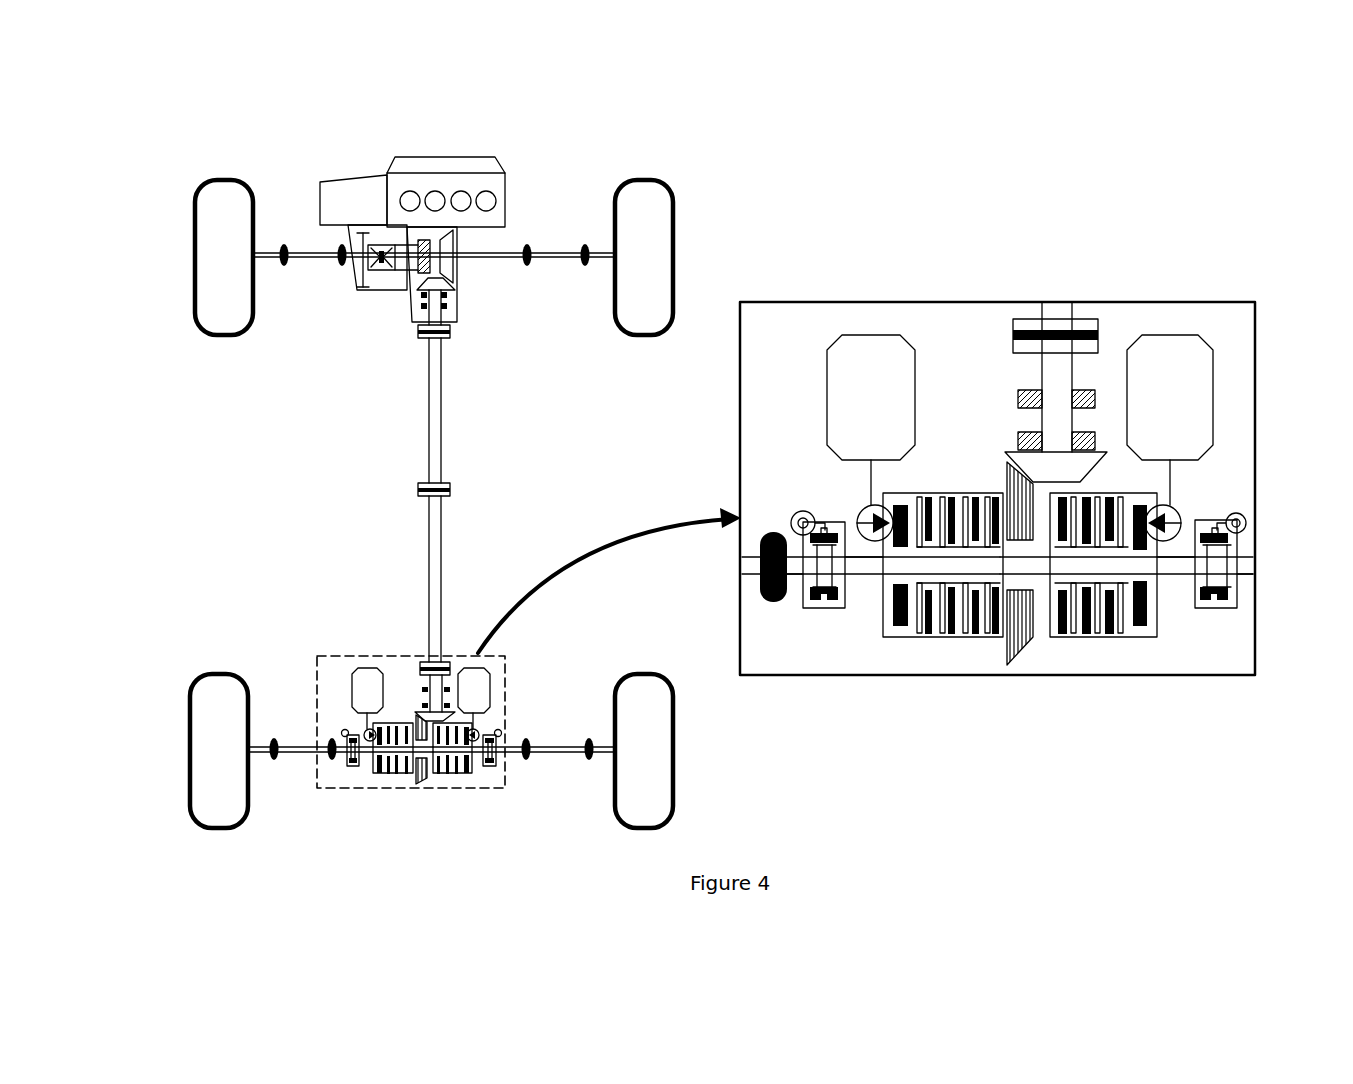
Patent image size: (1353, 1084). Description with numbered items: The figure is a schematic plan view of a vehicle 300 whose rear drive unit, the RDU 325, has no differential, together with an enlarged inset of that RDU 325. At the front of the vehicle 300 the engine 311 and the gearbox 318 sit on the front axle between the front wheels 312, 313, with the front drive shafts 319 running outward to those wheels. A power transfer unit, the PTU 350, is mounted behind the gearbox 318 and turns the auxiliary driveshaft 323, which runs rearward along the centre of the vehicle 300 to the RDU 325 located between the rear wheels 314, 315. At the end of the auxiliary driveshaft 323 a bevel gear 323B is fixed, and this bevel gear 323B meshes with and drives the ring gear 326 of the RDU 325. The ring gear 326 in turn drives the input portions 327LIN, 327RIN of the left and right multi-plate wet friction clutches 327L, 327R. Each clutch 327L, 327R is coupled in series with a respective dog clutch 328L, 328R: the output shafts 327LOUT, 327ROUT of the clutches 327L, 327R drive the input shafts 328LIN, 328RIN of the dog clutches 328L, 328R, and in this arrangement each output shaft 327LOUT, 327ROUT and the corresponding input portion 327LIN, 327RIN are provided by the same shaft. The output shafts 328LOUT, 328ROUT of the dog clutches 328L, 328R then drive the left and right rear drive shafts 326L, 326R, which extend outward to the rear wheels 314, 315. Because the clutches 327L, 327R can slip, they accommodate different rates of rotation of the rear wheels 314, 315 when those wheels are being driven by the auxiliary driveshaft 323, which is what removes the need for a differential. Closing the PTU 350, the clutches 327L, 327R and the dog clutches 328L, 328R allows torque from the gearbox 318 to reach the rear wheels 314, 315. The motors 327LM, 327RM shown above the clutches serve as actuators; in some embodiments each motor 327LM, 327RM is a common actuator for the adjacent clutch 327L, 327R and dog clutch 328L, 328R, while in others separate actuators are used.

The vehicle 300 is at (708, 178).
The engine 311 is at (472, 182).
The front left wheel 312 is at (220, 310).
The front right wheel 313 is at (642, 203).
The rear wheel 314 is at (218, 700).
The rear wheel 315 is at (645, 690).
The gearbox 318 is at (353, 195).
The front axle 319 is at (306, 252).
The auxiliary driveshaft 323 is at (433, 385).
The bevel gear 323B is at (420, 709).
The RDU 325 is at (463, 655).
The ring gear 326 is at (423, 782).
The left rear drive shaft 326L is at (300, 750).
The right rear drive shaft 326R is at (555, 750).
The multi-plate wet friction clutch 327L is at (397, 774).
The multi-plate wet friction clutch 327R is at (455, 774).
The motor 327LM is at (363, 677).
The motor 327RM is at (483, 682).
The input portion 327LIN is at (948, 490).
The output shaft 327LOUT is at (865, 576).
The input portion 327RIN is at (1108, 638).
The output shaft 327ROUT is at (1180, 576).
The dog clutch 328L is at (347, 767).
The dog clutch 328R is at (495, 767).
The input shaft 328LIN is at (855, 553).
The output shaft 328LOUT is at (795, 560).
The input shaft 328RIN is at (1180, 555).
The output shaft 328ROUT is at (1250, 564).
The PTU 350 is at (462, 300).